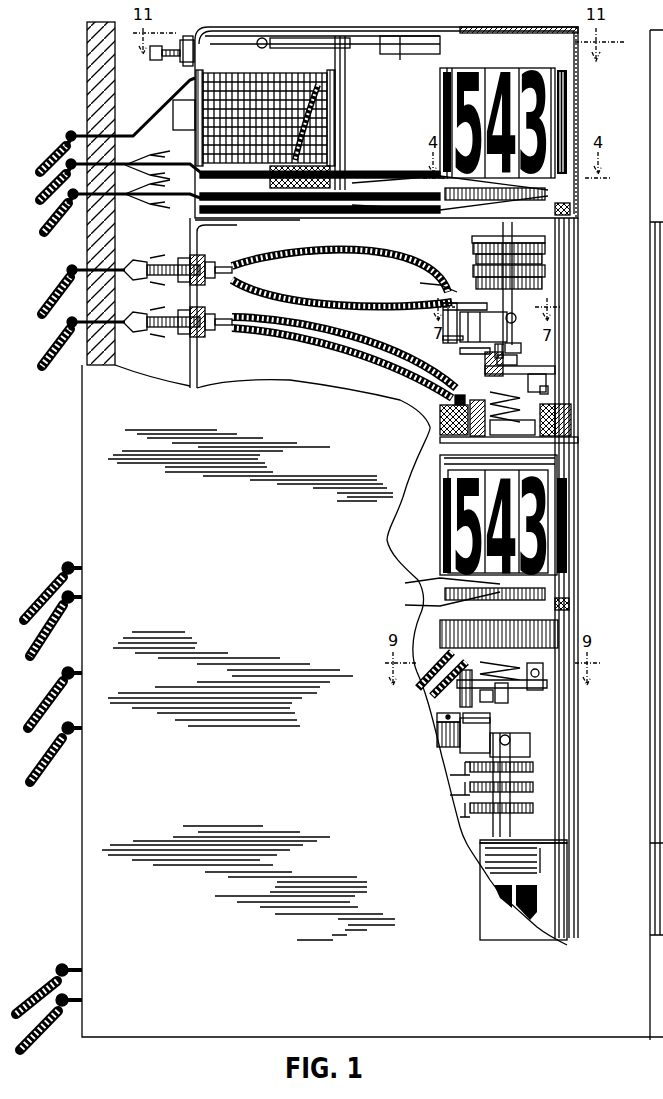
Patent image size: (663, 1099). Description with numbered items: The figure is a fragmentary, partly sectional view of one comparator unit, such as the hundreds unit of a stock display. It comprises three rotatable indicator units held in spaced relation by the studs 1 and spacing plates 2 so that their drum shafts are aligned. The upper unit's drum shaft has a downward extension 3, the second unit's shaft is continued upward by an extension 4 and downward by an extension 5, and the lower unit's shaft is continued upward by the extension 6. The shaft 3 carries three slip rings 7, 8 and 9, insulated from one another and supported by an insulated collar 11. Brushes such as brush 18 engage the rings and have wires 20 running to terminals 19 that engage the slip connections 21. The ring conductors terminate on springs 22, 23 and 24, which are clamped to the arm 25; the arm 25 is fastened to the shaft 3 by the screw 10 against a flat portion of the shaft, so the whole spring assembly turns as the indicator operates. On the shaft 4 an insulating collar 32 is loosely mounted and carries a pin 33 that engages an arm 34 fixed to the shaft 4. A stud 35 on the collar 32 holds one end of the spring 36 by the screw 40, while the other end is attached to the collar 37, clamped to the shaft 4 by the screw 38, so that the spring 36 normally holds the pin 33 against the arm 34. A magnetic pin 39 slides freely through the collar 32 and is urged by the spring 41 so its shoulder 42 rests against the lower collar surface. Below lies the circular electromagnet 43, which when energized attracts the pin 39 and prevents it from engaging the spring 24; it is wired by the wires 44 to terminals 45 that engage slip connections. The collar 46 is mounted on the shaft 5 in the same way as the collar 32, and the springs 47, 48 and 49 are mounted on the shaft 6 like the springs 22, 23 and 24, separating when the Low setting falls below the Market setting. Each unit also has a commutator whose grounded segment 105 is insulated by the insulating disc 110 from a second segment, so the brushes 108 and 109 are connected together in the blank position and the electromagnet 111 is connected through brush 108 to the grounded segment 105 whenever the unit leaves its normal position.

The studs 1 is at (575, 332).
The spacing plates 2 is at (195, 233).
The shaft extension 3 is at (510, 239).
The shaft extension 4 is at (517, 360).
The shaft extension 5 is at (505, 700).
The shaft extension 6 is at (508, 753).
The slip ring 7 is at (530, 249).
The slip ring 8 is at (545, 271).
The slip ring 9 is at (530, 283).
The screw 10 is at (540, 313).
The insulated collar 11 is at (530, 259).
The brush 18 is at (435, 252).
The terminals 19 is at (172, 278).
The wires 20 is at (355, 300).
The slip connections 21 is at (128, 262).
The spring 22 is at (449, 306).
The spring 23 is at (436, 298).
The spring 24 is at (443, 338).
The arm 25 is at (515, 321).
The insulating collar 32 is at (556, 369).
The pin 33 is at (503, 350).
The arm 34 is at (516, 348).
The stud 35 is at (548, 385).
The spring 36 is at (522, 402).
The collar 37 is at (440, 441).
The screw 38 is at (570, 430).
The pin 39 is at (480, 338).
The screw 40 is at (549, 392).
The spring 41 is at (460, 351).
The shoulder 42 is at (484, 362).
The circular electromagnet 43 is at (454, 400).
The wires 44 is at (300, 338).
The terminals 45 is at (172, 334).
The collar 46 is at (535, 685).
The spring 47 is at (437, 718).
The spring 48 is at (437, 735).
The spring 49 is at (460, 745).
The grounded segment 105 is at (560, 192).
The brush 108 is at (408, 199).
The brush 109 is at (388, 183).
The insulating disc 110 is at (570, 208).
The electromagnet 111 is at (262, 90).